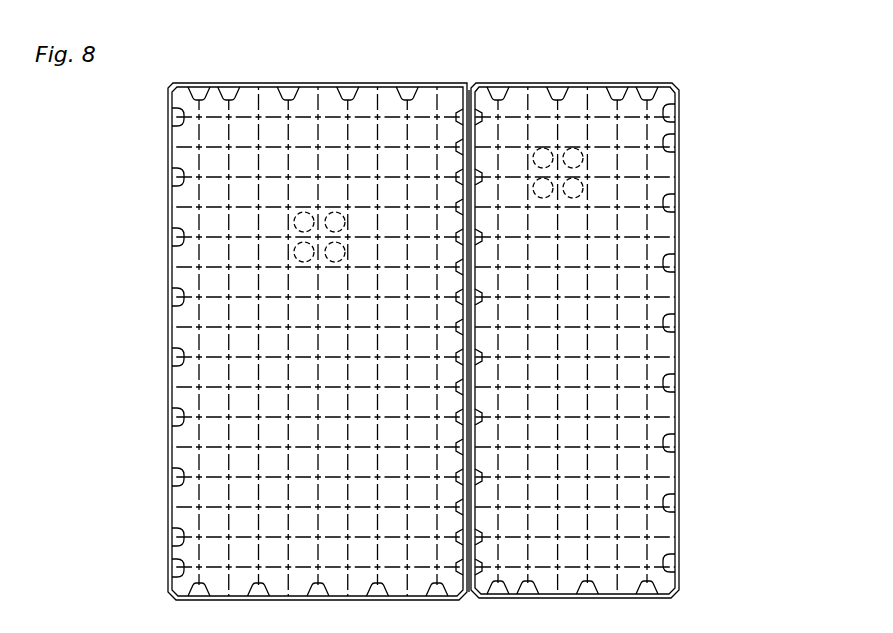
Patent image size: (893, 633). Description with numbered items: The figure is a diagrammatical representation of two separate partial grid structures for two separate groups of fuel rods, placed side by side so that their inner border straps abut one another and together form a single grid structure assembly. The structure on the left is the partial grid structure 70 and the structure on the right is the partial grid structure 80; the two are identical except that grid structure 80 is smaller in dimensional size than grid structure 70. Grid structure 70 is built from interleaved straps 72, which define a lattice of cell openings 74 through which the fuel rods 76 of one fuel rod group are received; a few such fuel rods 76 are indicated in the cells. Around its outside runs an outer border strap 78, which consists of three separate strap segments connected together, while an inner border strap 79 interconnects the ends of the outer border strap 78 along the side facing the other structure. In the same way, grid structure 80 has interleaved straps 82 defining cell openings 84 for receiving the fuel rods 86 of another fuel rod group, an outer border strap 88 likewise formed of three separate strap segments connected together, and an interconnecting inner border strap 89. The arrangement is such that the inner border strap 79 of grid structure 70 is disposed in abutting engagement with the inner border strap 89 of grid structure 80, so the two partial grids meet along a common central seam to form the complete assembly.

The partial grid structure 70 is at (168, 287).
The interleaved straps 72 is at (290, 135).
The cell openings 74 is at (333, 135).
The fuel rods 76 is at (294, 250).
The outer border strap 78 is at (240, 83).
The inner border strap 79 is at (468, 183).
The partial grid structure 80 is at (680, 293).
The interleaved straps 82 is at (575, 95).
The cell openings 84 is at (603, 128).
The fuel rods 86 is at (578, 175).
The outer border strap 88 is at (520, 82).
The inner border strap 89 is at (475, 380).